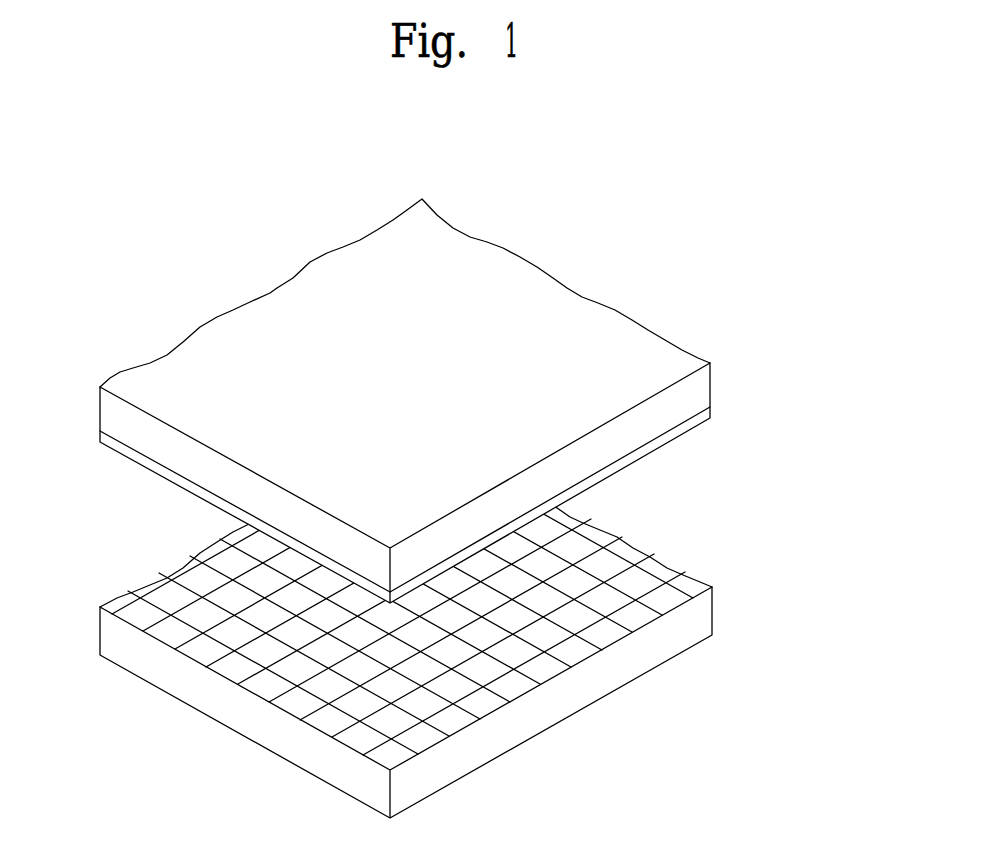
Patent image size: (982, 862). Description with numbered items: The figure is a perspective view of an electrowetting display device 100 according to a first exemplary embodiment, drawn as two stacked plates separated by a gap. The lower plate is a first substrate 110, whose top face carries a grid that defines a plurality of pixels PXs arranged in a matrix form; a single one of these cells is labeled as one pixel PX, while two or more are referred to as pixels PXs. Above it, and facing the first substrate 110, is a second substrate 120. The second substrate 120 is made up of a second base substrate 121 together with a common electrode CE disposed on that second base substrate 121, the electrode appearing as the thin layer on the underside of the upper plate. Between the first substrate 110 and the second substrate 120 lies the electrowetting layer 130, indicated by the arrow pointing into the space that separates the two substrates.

The electrowetting display device 100 is at (627, 172).
The first substrate 110 is at (442, 634).
The second substrate 120 is at (466, 401).
The second base substrate 121 is at (700, 387).
The common electrode CE is at (712, 417).
The electrowetting layer 130 is at (692, 503).
The pixel PX is at (432, 745).
The pixels PXs is at (402, 637).